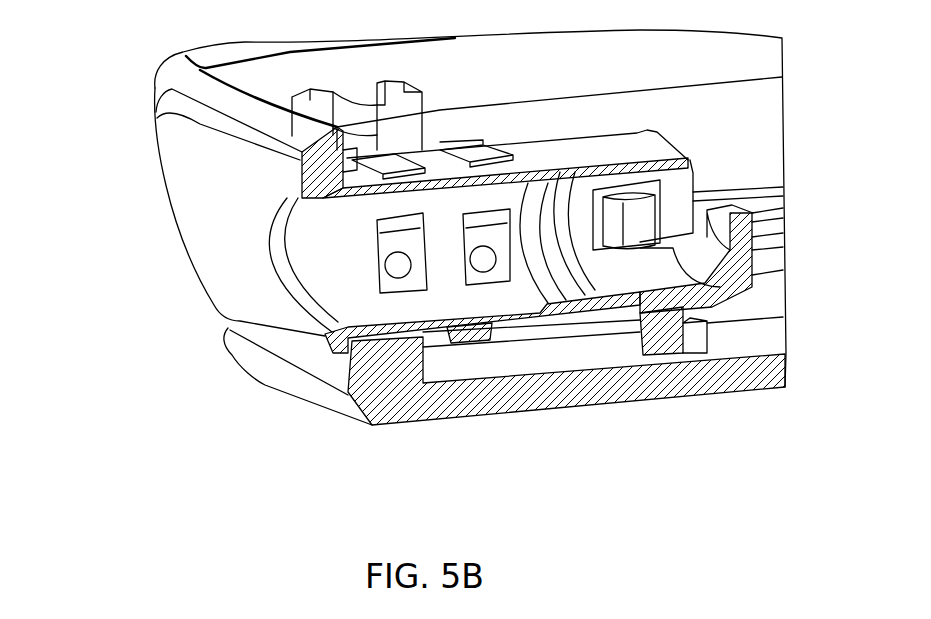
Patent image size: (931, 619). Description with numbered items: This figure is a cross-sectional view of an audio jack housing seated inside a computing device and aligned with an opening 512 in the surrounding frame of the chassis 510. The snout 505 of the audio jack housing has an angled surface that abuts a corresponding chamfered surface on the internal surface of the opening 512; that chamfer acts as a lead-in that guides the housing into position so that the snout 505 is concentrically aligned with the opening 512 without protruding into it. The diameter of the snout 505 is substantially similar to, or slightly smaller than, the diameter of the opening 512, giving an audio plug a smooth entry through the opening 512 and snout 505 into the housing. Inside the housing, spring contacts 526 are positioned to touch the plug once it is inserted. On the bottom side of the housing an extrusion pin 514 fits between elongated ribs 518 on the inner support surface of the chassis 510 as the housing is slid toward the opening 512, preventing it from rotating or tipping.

The snout 505 is at (378, 338).
The chassis 510 is at (158, 132).
The opening 512 is at (288, 328).
The extrusion pin 514 is at (670, 350).
The elongated ribs 518 is at (610, 349).
The spring contacts 526 is at (397, 265).